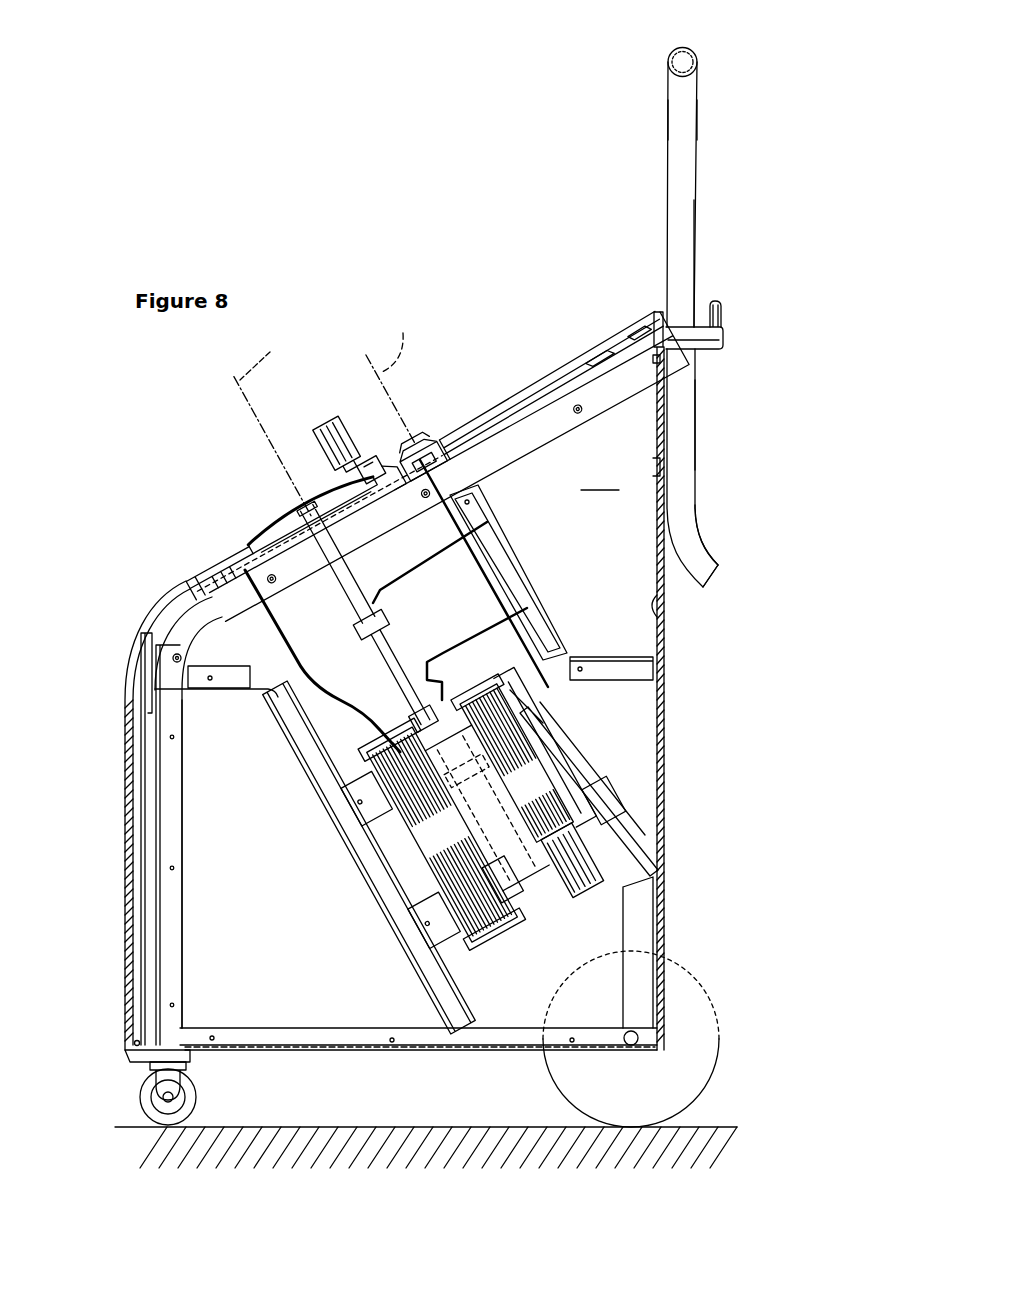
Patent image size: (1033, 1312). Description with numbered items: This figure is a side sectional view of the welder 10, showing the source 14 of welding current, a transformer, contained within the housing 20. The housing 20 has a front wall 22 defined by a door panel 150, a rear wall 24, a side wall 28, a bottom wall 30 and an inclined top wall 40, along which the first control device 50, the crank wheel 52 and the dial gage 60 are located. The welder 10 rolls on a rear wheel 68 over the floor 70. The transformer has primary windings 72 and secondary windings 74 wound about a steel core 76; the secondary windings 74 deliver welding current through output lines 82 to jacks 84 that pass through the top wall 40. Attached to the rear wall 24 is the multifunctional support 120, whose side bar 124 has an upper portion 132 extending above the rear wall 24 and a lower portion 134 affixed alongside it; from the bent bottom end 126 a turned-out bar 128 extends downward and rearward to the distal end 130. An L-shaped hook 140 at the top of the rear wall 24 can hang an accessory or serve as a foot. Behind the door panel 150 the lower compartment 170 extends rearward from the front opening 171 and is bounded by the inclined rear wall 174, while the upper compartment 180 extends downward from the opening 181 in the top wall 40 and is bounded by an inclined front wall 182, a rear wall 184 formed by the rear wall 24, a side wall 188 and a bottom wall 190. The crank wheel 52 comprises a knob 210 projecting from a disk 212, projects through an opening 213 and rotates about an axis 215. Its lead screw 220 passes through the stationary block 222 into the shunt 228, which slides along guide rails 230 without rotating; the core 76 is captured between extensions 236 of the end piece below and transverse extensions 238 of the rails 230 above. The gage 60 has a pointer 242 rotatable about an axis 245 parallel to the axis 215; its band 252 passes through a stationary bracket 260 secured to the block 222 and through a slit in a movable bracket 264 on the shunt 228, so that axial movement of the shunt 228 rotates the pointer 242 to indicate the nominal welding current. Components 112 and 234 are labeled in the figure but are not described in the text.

The welder 10 is at (713, 96).
The source of electrical welding current 14 is at (578, 716).
The housing 20 is at (524, 372).
The front wall 22 is at (126, 790).
The rear wall 24 is at (664, 745).
The side wall 28 is at (210, 945).
The bottom wall 30 is at (518, 1062).
The inclined top wall 40 is at (600, 345).
The first control device 50 is at (213, 584).
The second control device 52 is at (275, 513).
The first display device 60 is at (438, 421).
The rear wheel 68 is at (697, 1008).
The floor 70 is at (712, 1126).
The primary windings 72 is at (569, 840).
The secondary windings 74 is at (446, 847).
The steel core 76 is at (525, 830).
The output lines 82 is at (277, 624).
The jacks 84 is at (248, 573).
The caster 112 is at (190, 1077).
The multifunctional support 120 is at (699, 56).
The side bar 124 is at (696, 187).
The bent bottom end 126 is at (703, 517).
The turned-out bar 128 is at (709, 537).
The distal end 130 is at (719, 578).
The upper portion 132 is at (697, 234).
The lower portion 134 is at (697, 428).
The L-shaped hook 140 is at (731, 302).
The door panel 150 is at (126, 910).
The lower compartment 170 is at (260, 863).
The rectangular front opening 171 is at (126, 848).
The inclined rear wall 174 is at (368, 893).
The upper compartment 180 is at (600, 477).
The generally-rectangular opening 181 is at (572, 378).
The front wall of upper compartment 182 is at (516, 578).
The rear wall of upper compartment 184 is at (660, 606).
The side wall of upper compartment 188 is at (650, 462).
The bottom wall of upper compartment 190 is at (660, 662).
The knob 210 is at (325, 424).
The disk 212 is at (305, 518).
The opening 213 is at (372, 468).
The axis 215 is at (265, 355).
The lead screw 220 is at (341, 538).
The stationary block 222 is at (392, 628).
The shunt assembly 228 is at (412, 722).
The guide rail 230 is at (372, 655).
The latch top 234 is at (422, 430).
The extensions of end piece 236 is at (518, 905).
The transversely-extending extensions 238 is at (455, 780).
The rotatable pointer 242 is at (370, 465).
The axis 245 is at (391, 375).
The rotatable axially-extending band 252 is at (447, 512).
The stationary bracket 260 is at (452, 560).
The movable bracket 264 is at (442, 642).